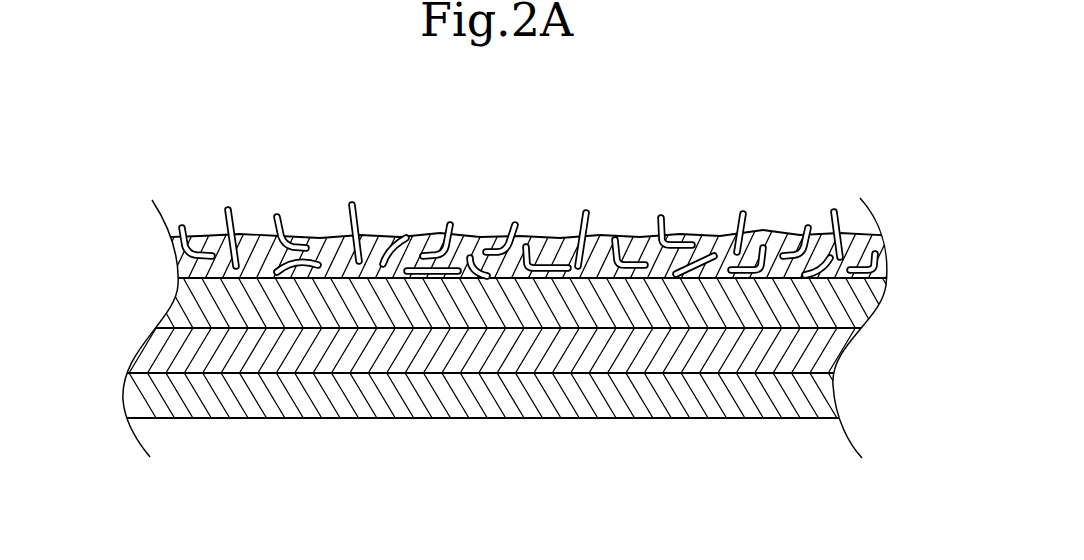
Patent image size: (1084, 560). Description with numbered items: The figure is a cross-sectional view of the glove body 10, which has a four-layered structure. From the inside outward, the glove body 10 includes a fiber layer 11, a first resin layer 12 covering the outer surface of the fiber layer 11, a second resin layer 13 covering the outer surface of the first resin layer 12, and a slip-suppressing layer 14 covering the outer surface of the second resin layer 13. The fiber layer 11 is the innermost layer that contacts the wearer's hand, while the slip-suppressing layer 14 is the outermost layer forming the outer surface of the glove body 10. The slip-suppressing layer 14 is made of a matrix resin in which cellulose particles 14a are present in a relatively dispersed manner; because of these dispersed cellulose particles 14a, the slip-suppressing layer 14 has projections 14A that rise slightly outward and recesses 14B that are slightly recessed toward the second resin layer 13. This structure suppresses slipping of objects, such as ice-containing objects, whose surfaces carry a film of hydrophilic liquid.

The glove body 10 is at (886, 122).
The fiber layer 11 is at (148, 400).
The first resin layer 12 is at (178, 357).
The second resin layer 13 is at (187, 305).
The slip-suppressing layer 14 is at (192, 262).
The projections 14A is at (242, 230).
The recesses 14B is at (330, 237).
The cellulose particles 14a is at (220, 213).